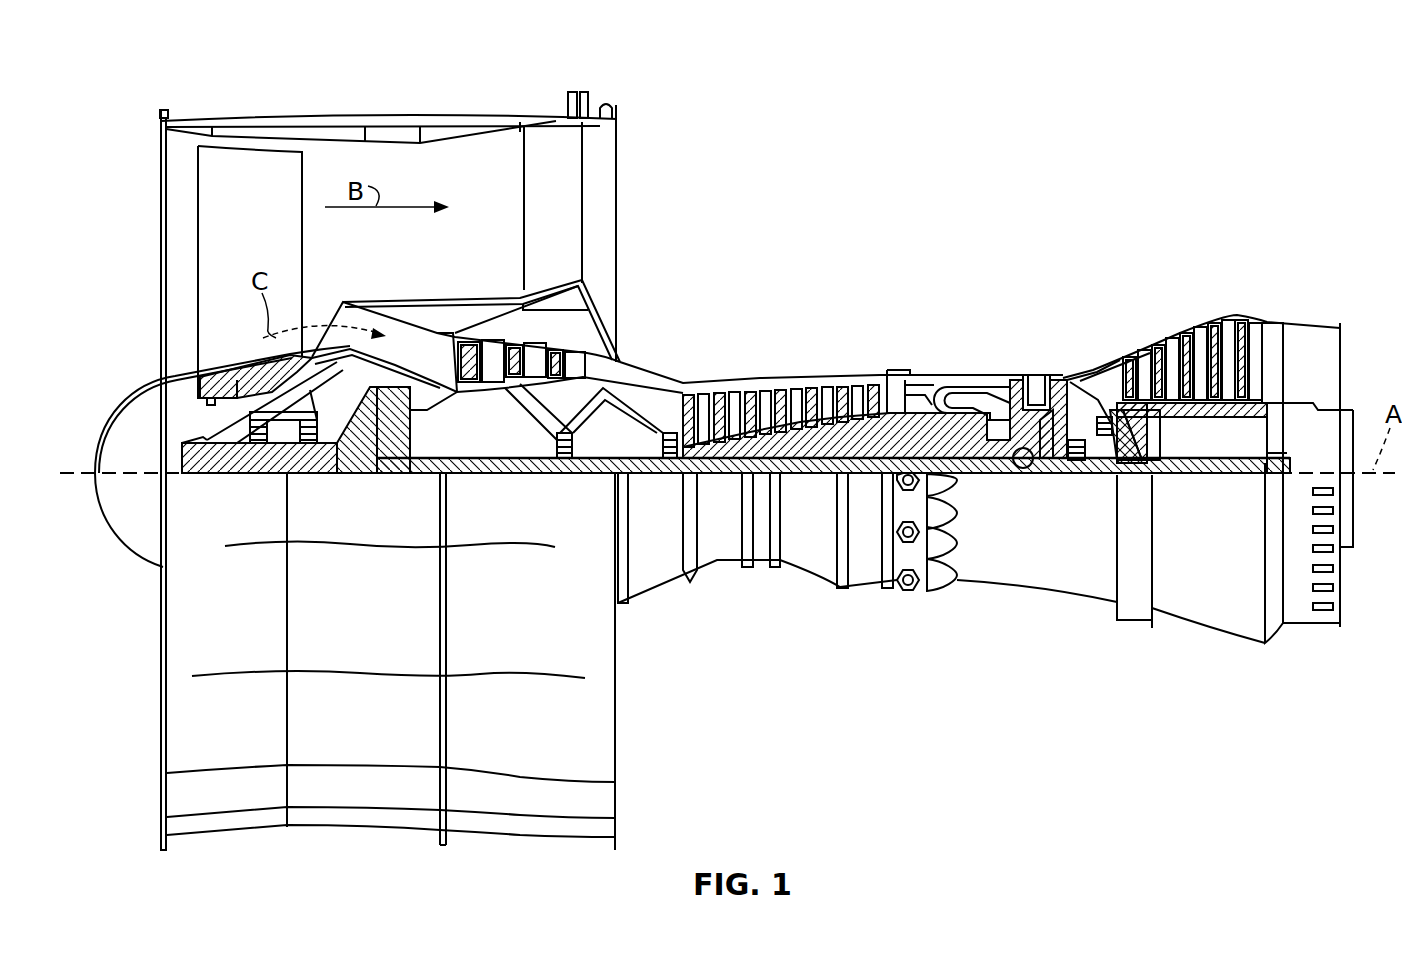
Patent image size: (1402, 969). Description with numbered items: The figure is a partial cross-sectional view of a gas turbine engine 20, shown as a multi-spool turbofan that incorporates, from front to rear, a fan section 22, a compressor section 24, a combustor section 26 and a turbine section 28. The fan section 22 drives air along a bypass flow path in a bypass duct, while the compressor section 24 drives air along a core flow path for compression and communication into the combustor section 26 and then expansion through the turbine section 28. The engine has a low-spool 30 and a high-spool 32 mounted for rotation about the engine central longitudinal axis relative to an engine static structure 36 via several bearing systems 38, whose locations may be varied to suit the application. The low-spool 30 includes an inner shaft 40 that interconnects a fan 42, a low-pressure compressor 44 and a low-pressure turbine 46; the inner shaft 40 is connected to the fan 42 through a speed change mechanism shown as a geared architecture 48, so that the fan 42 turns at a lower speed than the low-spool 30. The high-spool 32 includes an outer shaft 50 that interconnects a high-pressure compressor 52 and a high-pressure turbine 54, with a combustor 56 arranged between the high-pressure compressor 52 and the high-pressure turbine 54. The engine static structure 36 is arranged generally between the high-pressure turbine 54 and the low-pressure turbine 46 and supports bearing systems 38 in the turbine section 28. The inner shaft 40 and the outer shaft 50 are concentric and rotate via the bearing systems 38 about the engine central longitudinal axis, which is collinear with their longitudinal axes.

The gas turbine engine 20 is at (1208, 168).
The fan section 22 is at (344, 107).
The compressor section 24 is at (778, 316).
The combustor section 26 is at (965, 318).
The turbine section 28 is at (1123, 317).
The low-spool 30 is at (818, 478).
The high-spool 32 is at (860, 433).
The engine static structure 36 is at (865, 585).
The bearing systems 38 is at (247, 473).
The inner shaft 40 is at (645, 470).
The fan 42 is at (264, 253).
The low-pressure compressor 44 is at (537, 350).
The low-pressure turbine 46 is at (1195, 338).
The geared architecture 48 is at (387, 473).
The outer shaft 50 is at (1022, 468).
The high-pressure compressor 52 is at (787, 443).
The high-pressure turbine 54 is at (1035, 370).
The combustor 56 is at (968, 397).